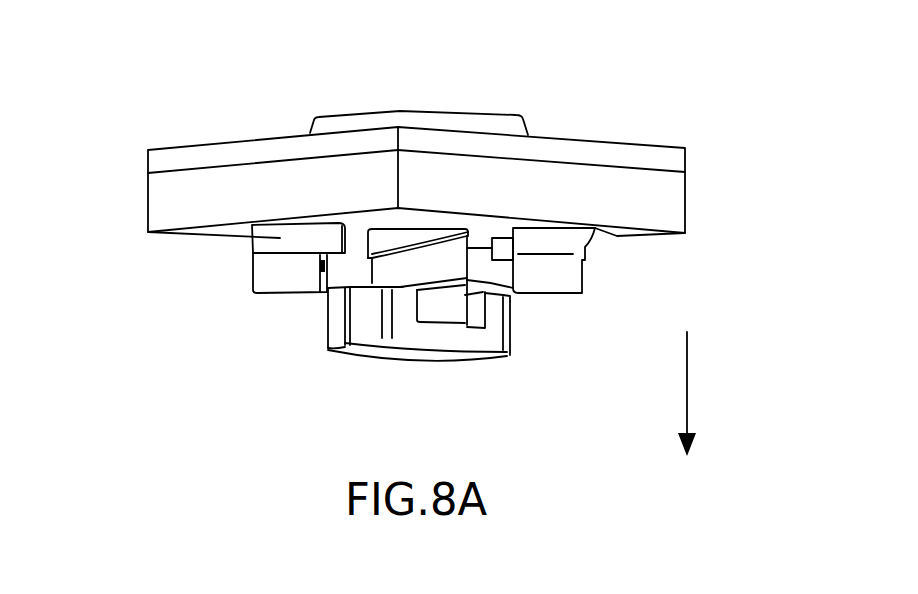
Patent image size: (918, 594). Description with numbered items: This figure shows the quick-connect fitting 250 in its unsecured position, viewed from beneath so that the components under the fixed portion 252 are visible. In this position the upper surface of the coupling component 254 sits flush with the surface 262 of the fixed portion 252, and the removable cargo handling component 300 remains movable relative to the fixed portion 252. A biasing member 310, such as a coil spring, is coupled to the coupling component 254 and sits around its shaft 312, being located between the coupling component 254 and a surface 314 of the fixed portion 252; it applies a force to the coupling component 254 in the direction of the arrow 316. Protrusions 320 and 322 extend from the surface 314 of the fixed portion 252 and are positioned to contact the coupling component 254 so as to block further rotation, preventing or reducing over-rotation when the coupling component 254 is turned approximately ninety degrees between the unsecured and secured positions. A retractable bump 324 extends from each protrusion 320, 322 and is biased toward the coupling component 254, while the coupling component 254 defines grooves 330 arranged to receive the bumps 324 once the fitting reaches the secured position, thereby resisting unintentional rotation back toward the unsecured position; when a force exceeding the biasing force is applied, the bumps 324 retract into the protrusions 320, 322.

The quick-connect fitting 250 is at (122, 186).
The fixed portion 252 is at (663, 212).
The coupling component 254 is at (497, 342).
The surface 262 is at (240, 165).
The removable cargo handling component 300 is at (648, 160).
The biasing member 310 is at (527, 290).
The shaft 312 is at (432, 275).
The surface 314 is at (620, 235).
The arrow 316 is at (687, 380).
The protrusion 320 is at (280, 235).
The protrusion 322 is at (503, 247).
The retractable bump 324 is at (322, 268).
The groove 330 is at (343, 344).